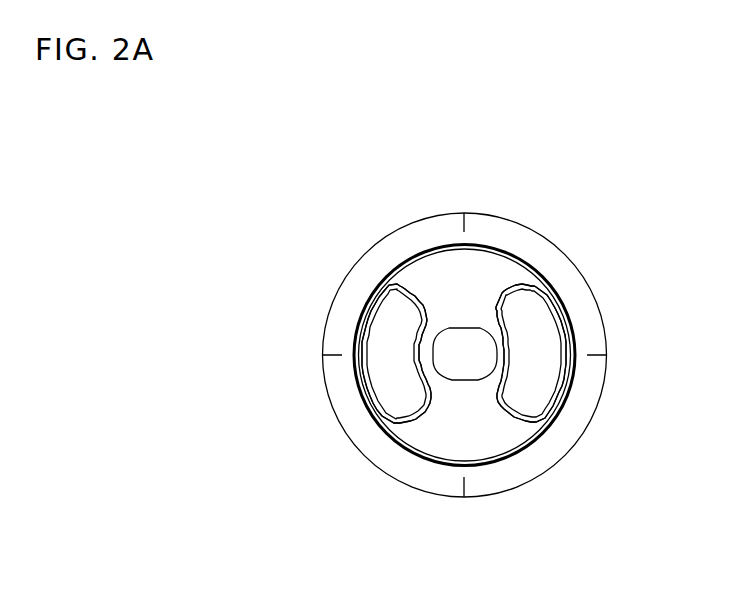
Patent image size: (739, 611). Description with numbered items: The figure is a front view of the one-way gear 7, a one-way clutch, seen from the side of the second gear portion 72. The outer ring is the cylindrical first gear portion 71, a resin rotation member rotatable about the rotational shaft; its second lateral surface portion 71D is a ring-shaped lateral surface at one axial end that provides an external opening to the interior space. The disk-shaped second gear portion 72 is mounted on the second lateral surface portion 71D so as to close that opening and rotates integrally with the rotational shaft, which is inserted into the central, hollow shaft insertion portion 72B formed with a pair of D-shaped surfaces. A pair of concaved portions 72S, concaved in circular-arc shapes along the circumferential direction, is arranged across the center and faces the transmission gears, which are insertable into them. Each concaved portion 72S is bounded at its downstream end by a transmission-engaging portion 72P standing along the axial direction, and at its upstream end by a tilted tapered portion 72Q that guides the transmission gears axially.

The one-way gear 7 is at (351, 208).
The first gear portion 71 is at (503, 222).
The second lateral surface portion 71D is at (414, 226).
The second gear portion 72 is at (433, 443).
The shaft insertion portion 72B is at (470, 371).
The transmission-engaging portion 72P is at (418, 292).
The tapered portion 72Q is at (382, 410).
The concaved portion 72S is at (382, 367).